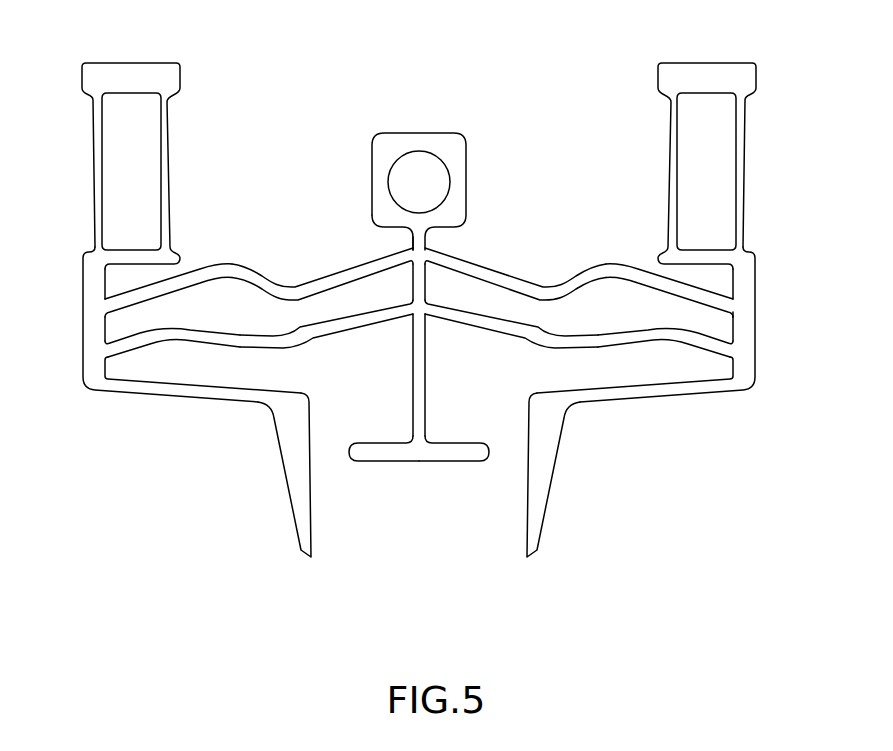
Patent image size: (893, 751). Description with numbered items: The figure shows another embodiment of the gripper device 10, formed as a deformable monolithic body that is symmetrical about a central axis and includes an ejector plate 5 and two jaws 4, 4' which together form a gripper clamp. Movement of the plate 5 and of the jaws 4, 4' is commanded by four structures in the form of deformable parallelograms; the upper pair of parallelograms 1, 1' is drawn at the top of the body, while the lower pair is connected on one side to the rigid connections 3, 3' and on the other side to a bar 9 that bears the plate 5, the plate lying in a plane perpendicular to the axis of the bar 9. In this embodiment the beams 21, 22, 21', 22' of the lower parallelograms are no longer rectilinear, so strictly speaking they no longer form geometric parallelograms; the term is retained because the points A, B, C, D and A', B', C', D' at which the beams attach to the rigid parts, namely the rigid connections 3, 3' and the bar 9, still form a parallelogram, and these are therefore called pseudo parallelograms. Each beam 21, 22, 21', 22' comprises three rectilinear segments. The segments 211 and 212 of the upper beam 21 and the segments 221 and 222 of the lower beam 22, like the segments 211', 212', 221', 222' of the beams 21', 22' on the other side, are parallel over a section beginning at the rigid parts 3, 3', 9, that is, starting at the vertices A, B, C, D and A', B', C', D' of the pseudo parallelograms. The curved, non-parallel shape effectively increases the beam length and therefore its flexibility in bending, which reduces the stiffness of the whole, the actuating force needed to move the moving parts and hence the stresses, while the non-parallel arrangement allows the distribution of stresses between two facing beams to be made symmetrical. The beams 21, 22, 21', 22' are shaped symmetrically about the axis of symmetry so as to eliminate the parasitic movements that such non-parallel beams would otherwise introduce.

The deformable parallelogram 1 is at (106, 166).
The deformable parallelogram 1' is at (728, 166).
The rigid connection 3 is at (165, 324).
The rigid connection 3' is at (619, 315).
The jaw 4 is at (272, 475).
The jaw 4' is at (562, 475).
The ejector plate 5 is at (441, 462).
The bar 9 is at (426, 390).
The profile body 10 is at (411, 310).
The beam 21 is at (259, 258).
The segment 211 is at (171, 293).
The segment 212 is at (322, 282).
The beam 22 is at (259, 333).
The segment 221 is at (172, 354).
The segment 222 is at (326, 340).
The beam 21' is at (579, 252).
The segment 211' is at (602, 290).
The segment 212' is at (530, 243).
The beam 22' is at (579, 333).
The segment 221' is at (580, 341).
The segment 222' is at (552, 322).
The attachment point A is at (116, 284).
The attachment point B is at (396, 240).
The attachment point C is at (395, 303).
The attachment point D is at (117, 327).
The attachment point A' is at (584, 264).
The attachment point B' is at (720, 293).
The attachment point C' is at (576, 302).
The attachment point D' is at (583, 309).